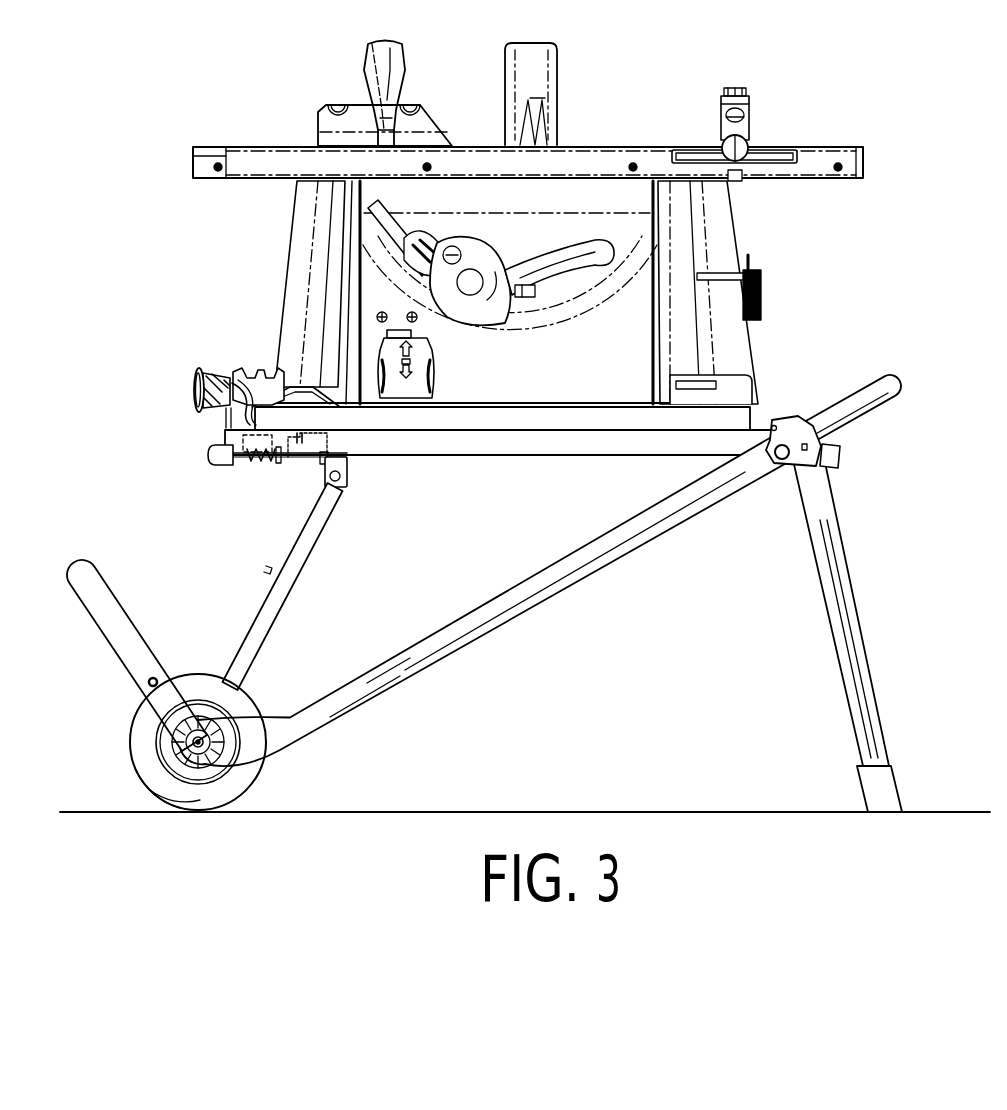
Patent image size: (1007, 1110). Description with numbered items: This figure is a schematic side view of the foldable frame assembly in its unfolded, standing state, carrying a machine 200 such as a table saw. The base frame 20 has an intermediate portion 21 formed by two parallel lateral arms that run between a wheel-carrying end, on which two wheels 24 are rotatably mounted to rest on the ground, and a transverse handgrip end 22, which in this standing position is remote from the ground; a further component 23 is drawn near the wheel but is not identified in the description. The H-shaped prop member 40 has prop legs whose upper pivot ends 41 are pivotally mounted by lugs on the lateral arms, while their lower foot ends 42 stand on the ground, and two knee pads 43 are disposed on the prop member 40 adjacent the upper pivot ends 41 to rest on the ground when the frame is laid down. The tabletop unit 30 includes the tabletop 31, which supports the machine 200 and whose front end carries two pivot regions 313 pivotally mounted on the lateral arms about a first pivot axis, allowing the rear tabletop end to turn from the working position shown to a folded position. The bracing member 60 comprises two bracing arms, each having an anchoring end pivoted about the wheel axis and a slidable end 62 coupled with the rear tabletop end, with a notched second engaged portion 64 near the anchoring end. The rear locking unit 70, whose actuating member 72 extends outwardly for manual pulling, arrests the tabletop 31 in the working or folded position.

The machine 200 is at (508, 241).
The base frame 20 is at (484, 600).
The intermediate portion 21 is at (523, 620).
The handgrip end 22 is at (897, 381).
The wheel leg 23 is at (80, 572).
The wheels 24 is at (135, 745).
The tabletop unit 30 is at (733, 415).
The tabletop 31 is at (472, 450).
The pivot regions 313 is at (762, 462).
The prop member 40 is at (889, 632).
The upper pivot end 41 is at (792, 444).
The lower foot end 42 is at (883, 788).
The knee pads 43 is at (840, 455).
The bracing member 60 is at (243, 573).
The slidable end 62 is at (318, 462).
The second engaged portion 64 is at (248, 608).
The rear locking unit 70 is at (207, 448).
The actuating member 72 is at (210, 458).